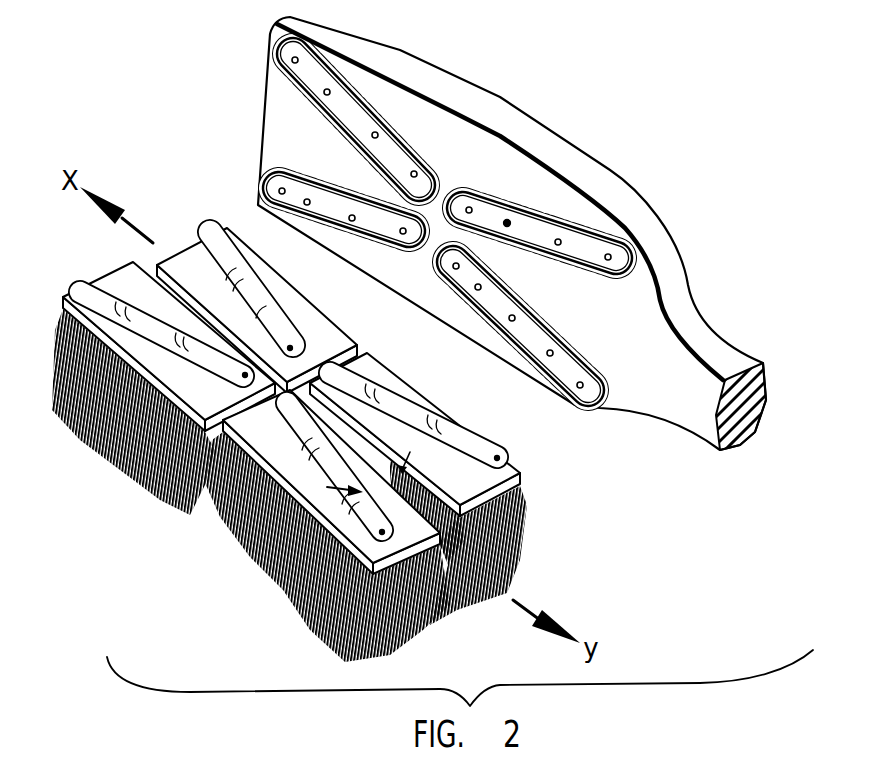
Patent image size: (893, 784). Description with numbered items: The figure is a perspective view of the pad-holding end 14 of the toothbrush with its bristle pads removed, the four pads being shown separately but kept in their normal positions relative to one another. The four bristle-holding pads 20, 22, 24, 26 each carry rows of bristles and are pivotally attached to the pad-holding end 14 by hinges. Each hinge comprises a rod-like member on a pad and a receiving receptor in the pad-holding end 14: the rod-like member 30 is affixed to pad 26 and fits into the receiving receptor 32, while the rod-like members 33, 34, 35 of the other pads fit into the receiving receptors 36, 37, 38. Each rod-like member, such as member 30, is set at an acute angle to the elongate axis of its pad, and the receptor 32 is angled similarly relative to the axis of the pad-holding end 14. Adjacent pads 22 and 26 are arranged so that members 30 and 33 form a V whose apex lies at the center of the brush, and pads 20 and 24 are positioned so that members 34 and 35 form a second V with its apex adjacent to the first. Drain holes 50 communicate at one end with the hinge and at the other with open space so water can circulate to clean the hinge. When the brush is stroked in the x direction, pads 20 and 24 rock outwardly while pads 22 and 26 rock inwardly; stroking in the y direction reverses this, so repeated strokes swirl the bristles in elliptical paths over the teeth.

The pad-holding end 14 is at (527, 130).
The bristle-holding pad 20 is at (137, 283).
The bristle-holding pad 22 is at (207, 520).
The bristle-holding pad 24 is at (277, 287).
The bristle-holding pad 26 is at (398, 387).
The rod-like member 30 is at (453, 437).
The receiving receptor 32 is at (480, 307).
The rod-like member 33 is at (262, 596).
The rod-like member 34 is at (280, 326).
The rod-like member 35 is at (88, 440).
The receiving receptor 36 is at (487, 212).
The receiving receptor 37 is at (378, 238).
The receiving receptor 38 is at (404, 157).
The drain hole 50 is at (558, 247).